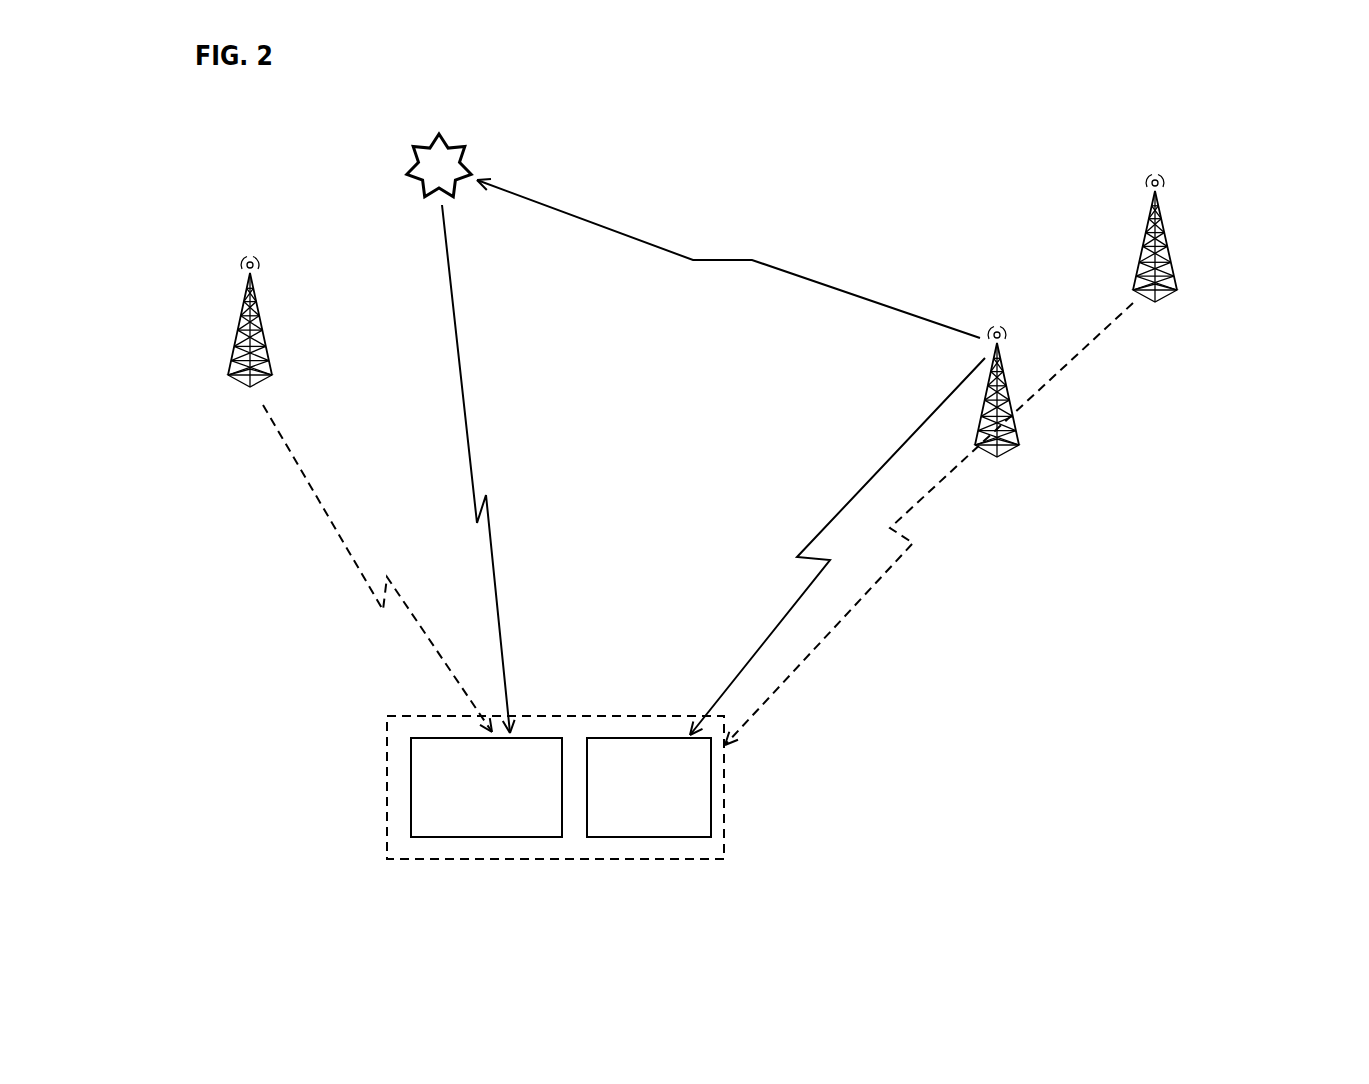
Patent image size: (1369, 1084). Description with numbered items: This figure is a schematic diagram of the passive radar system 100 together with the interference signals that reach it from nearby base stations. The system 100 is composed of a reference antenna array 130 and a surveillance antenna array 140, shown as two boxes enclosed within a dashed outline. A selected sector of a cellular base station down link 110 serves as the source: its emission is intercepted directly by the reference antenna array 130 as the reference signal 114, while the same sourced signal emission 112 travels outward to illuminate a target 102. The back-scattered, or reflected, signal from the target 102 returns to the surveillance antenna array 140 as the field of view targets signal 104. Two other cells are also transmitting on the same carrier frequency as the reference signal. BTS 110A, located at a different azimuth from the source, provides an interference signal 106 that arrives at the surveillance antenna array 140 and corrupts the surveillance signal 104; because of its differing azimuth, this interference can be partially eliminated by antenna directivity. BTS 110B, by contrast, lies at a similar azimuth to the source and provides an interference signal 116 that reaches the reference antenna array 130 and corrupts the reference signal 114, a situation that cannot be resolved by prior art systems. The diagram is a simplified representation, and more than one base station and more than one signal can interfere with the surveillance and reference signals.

The PR system 100 is at (758, 878).
The target 102 is at (410, 173).
The field of view targets signal 104 is at (467, 433).
The interference signal 106 is at (348, 550).
The base station down link 110 is at (1010, 350).
The BTS 110A is at (240, 328).
The BTS 110B is at (1172, 257).
The signal emission 112 is at (783, 283).
The reference signal 114 is at (857, 495).
The interference signal 116 is at (827, 635).
The reference antenna array 130 is at (713, 793).
The surveillance antenna array 140 is at (411, 799).